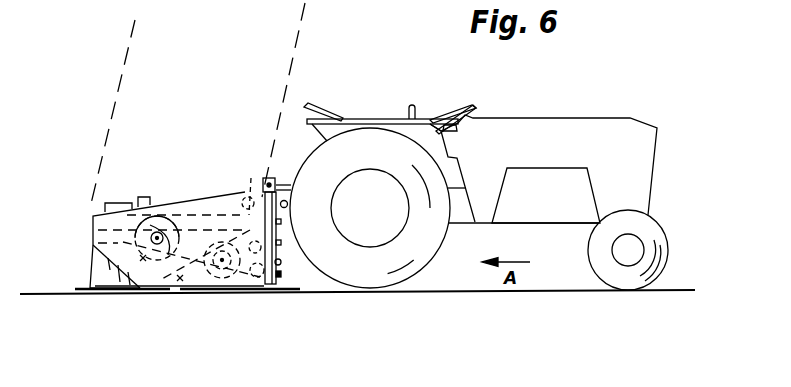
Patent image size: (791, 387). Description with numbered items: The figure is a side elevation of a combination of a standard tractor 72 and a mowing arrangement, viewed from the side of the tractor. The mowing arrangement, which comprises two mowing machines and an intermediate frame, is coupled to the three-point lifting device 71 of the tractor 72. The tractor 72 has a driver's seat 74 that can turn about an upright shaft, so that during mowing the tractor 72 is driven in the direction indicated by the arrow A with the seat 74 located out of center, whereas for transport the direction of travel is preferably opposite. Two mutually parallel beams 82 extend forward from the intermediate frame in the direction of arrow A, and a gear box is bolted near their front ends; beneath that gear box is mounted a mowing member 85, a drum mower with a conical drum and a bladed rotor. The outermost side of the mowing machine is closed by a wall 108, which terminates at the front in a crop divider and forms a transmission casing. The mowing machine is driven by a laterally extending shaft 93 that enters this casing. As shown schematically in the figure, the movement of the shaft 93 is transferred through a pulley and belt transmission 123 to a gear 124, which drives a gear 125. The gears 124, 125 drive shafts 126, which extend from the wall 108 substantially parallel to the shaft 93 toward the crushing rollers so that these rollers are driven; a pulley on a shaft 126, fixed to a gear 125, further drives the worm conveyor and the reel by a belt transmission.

The three-point lifting device 71 is at (294, 174).
The tractor 72 is at (607, 118).
The driver's seat 74 is at (418, 107).
The beams 82 is at (181, 201).
The mowing member 85 is at (92, 265).
The shaft 93 is at (251, 178).
The wall 108 is at (219, 192).
The pulley and belt transmission 123 is at (278, 238).
The gear 124 is at (280, 251).
The gear 125 is at (282, 262).
The shafts 126 is at (268, 287).